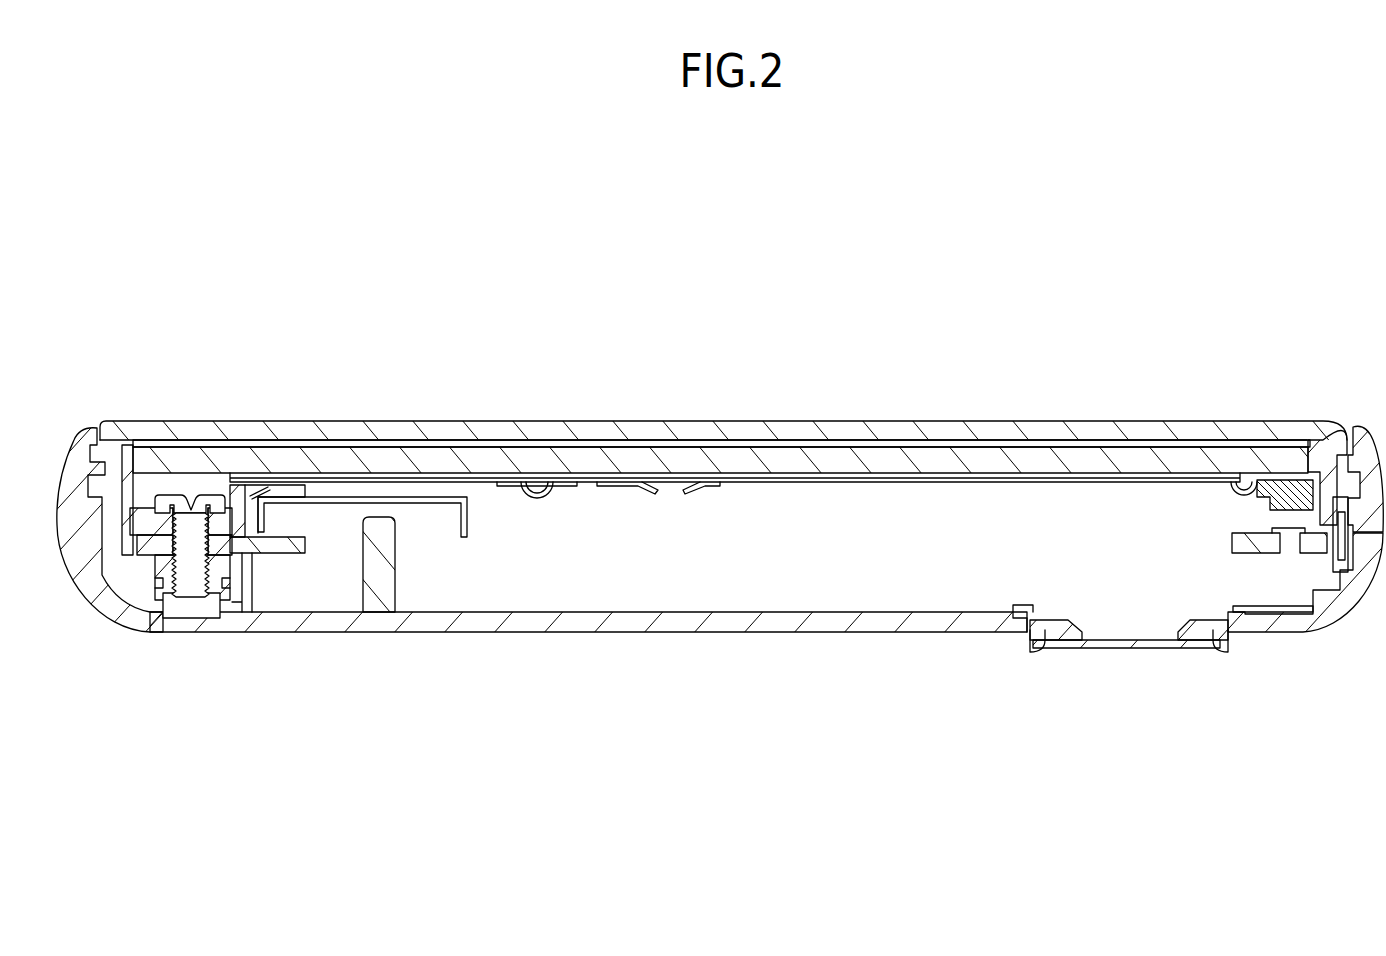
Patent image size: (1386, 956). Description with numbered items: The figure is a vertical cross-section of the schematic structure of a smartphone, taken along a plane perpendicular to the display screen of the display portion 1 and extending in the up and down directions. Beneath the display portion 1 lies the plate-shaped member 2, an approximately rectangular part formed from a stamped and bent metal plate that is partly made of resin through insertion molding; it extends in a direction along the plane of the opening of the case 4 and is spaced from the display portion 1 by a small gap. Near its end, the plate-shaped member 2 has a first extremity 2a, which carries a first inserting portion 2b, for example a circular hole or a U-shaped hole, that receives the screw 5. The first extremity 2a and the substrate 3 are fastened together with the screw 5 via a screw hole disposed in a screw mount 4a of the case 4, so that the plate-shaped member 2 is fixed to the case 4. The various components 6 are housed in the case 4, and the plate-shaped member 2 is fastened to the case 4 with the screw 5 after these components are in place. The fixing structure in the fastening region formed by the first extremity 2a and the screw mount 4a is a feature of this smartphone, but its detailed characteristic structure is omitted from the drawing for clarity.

The display portion 1 is at (386, 458).
The plate-shaped member 2 is at (243, 487).
The first extremity 2a is at (140, 522).
The first inserting portion 2b is at (200, 507).
The substrate 3 is at (242, 548).
The case 4 is at (76, 563).
The screw mount 4a is at (160, 568).
The screw 5 is at (163, 495).
The various components 6 is at (300, 517).